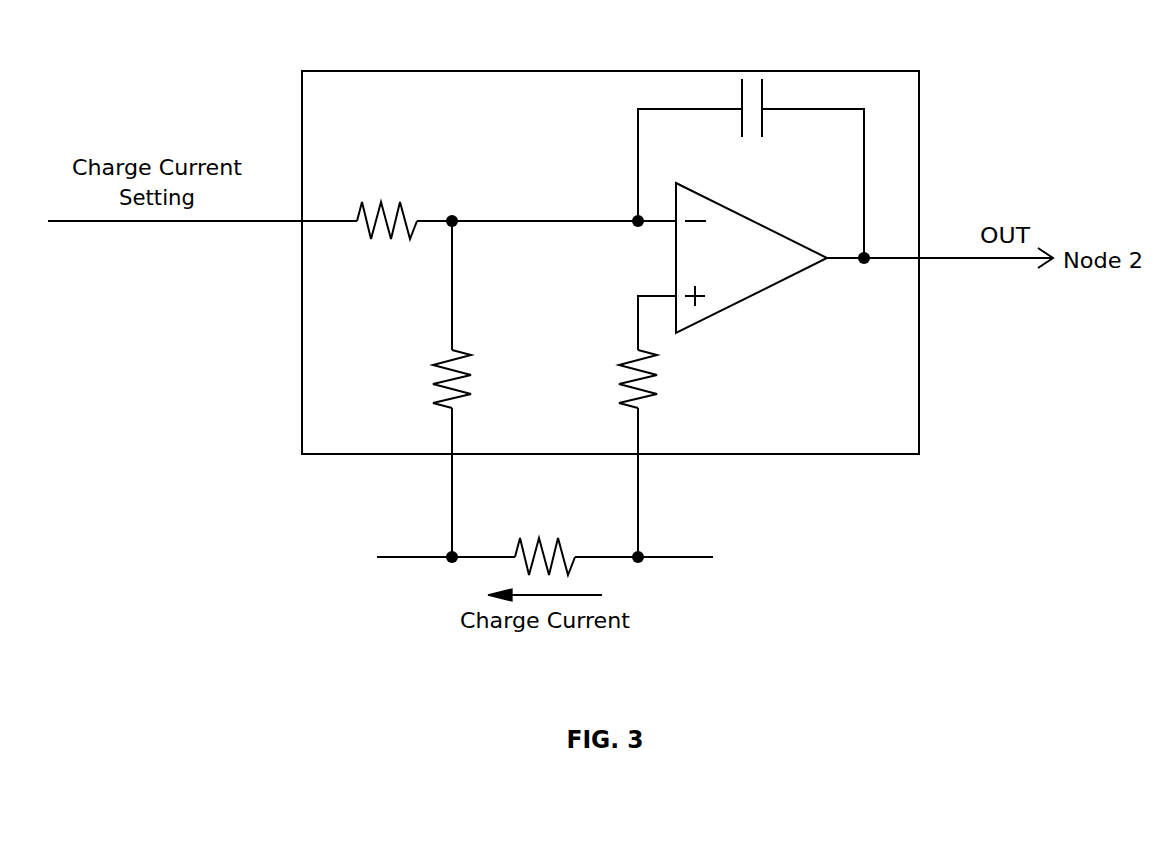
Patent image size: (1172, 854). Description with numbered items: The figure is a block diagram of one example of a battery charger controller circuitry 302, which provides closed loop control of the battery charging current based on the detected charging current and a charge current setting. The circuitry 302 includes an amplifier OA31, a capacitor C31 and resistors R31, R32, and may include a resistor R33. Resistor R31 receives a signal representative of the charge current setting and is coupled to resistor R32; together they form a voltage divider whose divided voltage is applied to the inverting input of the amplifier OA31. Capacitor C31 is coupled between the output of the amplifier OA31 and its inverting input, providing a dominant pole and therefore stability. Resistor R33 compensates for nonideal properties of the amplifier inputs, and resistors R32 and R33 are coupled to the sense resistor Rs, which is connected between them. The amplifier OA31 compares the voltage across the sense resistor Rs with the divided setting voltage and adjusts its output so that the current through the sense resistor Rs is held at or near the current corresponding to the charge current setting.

The battery charger controller circuitry 302 is at (631, 75).
The resistor R31 is at (387, 203).
The resistor R32 is at (480, 379).
The resistor R33 is at (667, 379).
The capacitor C31 is at (775, 112).
The amplifier OA31 is at (751, 258).
The sense resistor Rs is at (545, 542).